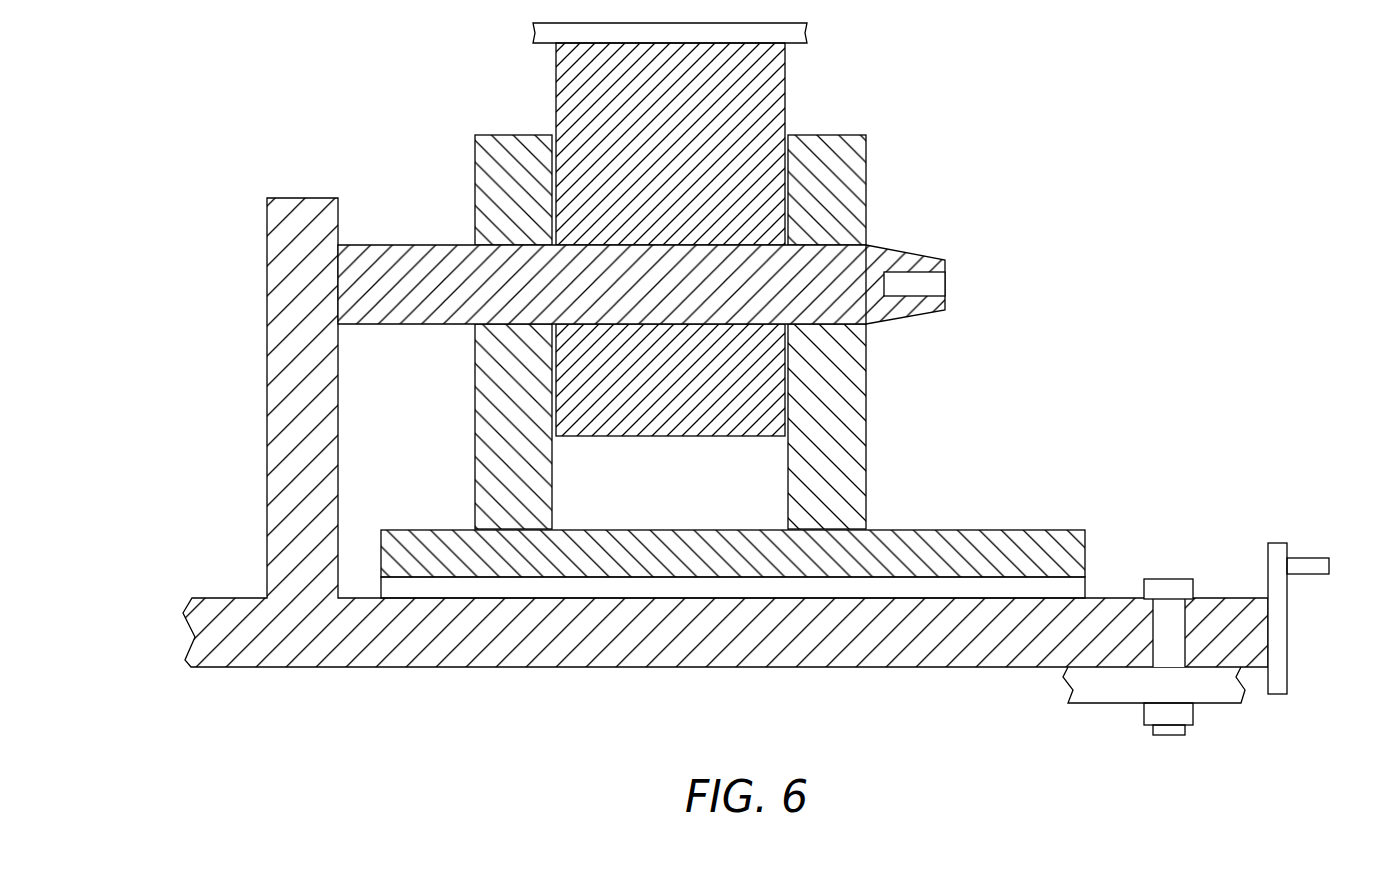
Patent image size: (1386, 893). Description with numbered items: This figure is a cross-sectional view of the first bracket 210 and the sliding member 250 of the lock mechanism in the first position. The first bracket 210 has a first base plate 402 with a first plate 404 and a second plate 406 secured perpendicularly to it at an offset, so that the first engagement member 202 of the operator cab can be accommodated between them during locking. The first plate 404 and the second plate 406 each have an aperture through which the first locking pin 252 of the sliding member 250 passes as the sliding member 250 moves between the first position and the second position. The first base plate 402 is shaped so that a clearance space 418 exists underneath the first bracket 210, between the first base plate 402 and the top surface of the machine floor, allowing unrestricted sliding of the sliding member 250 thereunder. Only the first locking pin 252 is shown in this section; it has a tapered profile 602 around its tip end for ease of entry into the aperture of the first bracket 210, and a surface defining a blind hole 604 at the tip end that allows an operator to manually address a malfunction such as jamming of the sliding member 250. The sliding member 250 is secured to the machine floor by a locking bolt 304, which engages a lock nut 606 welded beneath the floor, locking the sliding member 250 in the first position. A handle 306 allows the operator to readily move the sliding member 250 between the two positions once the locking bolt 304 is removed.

The first engagement member 202 is at (785, 77).
The first bracket 210 is at (447, 105).
The sliding member 250 is at (226, 700).
The first locking pin 252 is at (427, 352).
The locking bolt 304 is at (1185, 579).
The handle 306 is at (1307, 558).
The first base plate 402 is at (982, 530).
The first plate 404 is at (829, 135).
The second plate 406 is at (517, 135).
The clearance space 418 is at (1118, 574).
The tapered profile 602 is at (913, 254).
The blind hole 604 is at (942, 283).
The lock nut 606 is at (1195, 713).